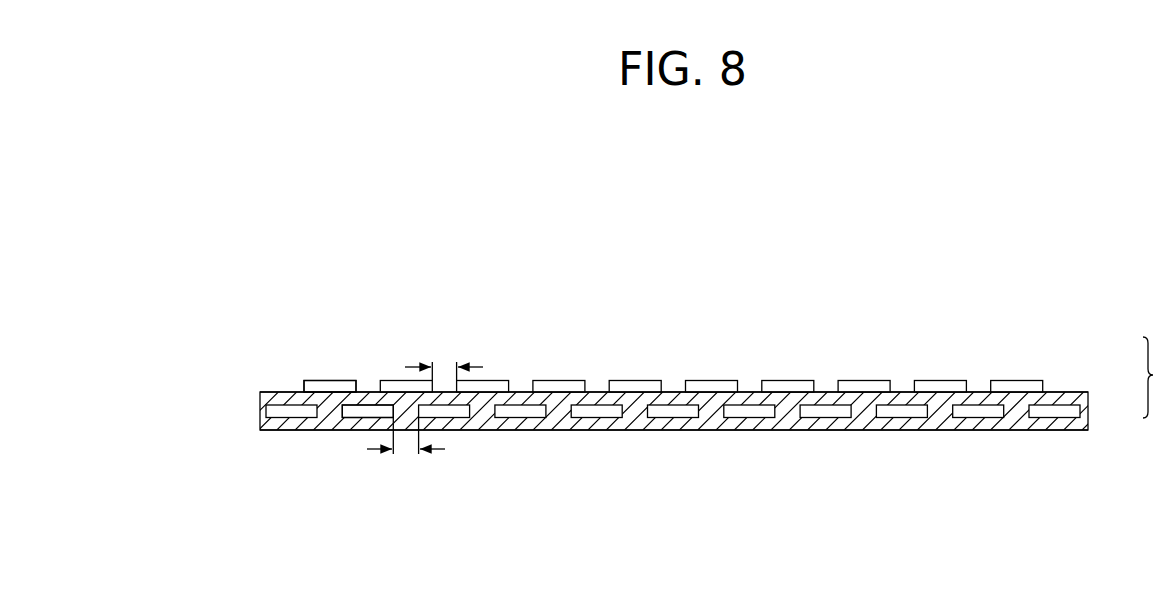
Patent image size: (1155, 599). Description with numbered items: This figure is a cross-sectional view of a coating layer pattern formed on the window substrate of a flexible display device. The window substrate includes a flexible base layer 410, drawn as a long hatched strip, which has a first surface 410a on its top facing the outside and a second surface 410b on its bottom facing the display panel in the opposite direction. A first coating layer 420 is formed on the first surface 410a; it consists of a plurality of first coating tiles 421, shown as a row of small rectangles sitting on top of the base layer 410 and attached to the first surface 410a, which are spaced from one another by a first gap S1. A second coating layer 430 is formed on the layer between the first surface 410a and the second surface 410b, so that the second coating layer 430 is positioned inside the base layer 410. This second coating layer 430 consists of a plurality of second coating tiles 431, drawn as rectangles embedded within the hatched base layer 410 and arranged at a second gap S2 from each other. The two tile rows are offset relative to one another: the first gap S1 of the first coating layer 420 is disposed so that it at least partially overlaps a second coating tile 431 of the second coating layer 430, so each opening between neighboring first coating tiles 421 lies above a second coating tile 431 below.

The flexible base layer 410 is at (1073, 398).
The first surface 410a is at (259, 391).
The second surface 410b is at (259, 431).
The first coating layer 420 is at (1043, 387).
The first coating tile 421 is at (315, 380).
The second coating layer 430 is at (1073, 412).
The second coating tile 431 is at (349, 414).
The first gap S1 is at (444, 354).
The second gap S2 is at (406, 453).